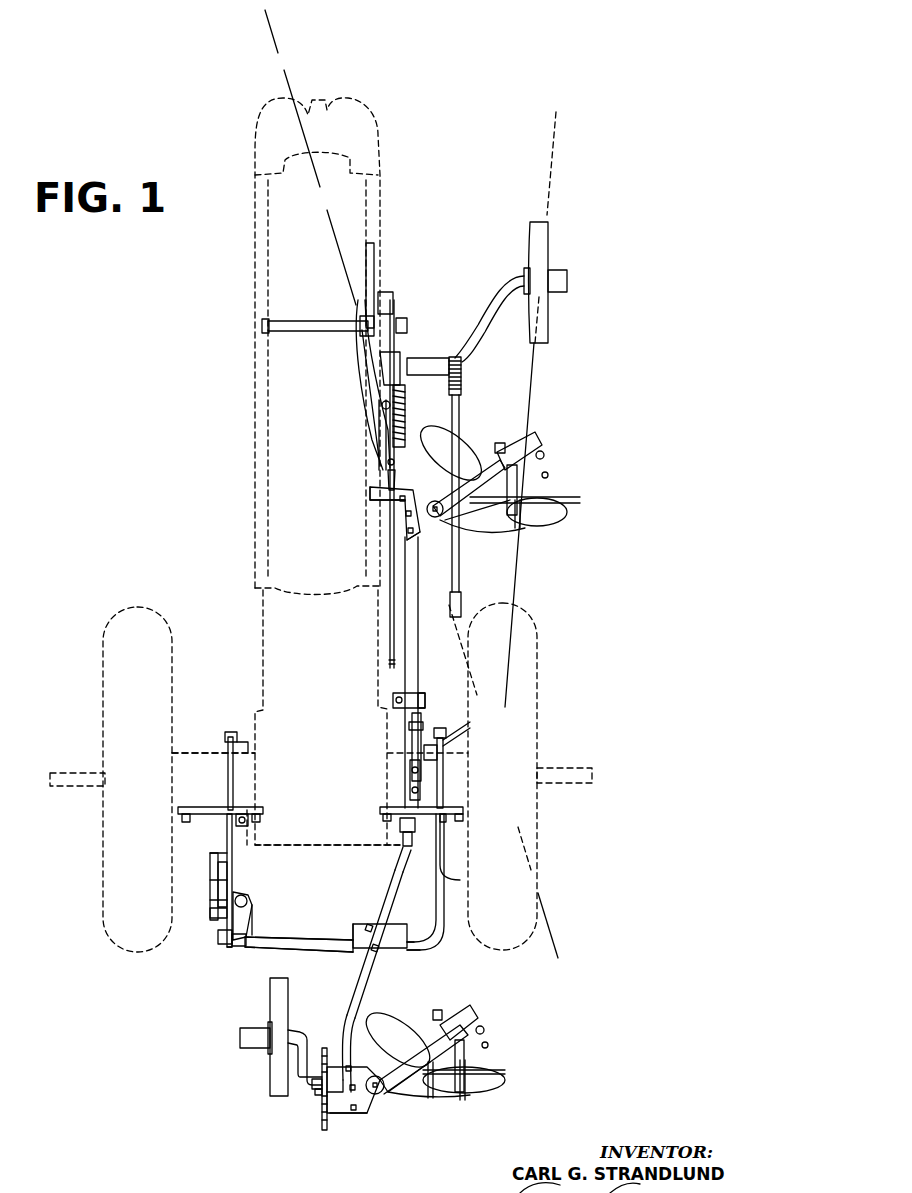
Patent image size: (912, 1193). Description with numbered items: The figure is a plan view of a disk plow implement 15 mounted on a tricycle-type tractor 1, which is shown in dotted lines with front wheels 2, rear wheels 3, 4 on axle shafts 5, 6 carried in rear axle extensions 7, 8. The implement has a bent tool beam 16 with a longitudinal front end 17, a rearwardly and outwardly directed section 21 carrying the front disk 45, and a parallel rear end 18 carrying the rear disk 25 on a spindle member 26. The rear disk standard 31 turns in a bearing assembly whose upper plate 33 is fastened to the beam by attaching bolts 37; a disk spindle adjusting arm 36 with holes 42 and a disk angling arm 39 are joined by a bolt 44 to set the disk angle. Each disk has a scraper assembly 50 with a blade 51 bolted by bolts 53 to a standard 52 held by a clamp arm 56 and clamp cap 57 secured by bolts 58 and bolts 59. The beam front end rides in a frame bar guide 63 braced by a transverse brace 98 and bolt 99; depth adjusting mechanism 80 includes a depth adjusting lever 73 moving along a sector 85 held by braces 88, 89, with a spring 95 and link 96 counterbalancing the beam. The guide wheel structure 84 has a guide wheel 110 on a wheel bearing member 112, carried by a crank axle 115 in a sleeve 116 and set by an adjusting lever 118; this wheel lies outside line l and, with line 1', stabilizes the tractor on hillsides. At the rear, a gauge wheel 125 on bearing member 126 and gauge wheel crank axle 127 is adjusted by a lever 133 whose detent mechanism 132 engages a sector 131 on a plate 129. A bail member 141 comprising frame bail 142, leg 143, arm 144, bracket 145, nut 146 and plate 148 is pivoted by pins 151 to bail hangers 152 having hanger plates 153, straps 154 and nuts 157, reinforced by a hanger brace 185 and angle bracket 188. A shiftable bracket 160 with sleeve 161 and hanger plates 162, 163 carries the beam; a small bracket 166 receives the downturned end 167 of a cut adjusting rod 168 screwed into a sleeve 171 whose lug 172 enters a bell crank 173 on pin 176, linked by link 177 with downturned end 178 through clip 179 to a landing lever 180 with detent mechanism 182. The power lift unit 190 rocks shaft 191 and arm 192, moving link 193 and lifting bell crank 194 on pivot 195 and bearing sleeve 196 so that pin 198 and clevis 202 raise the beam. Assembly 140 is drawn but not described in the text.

The tractor 1 is at (362, 484).
The line l' 1' is at (546, 409).
The front wheels 2 is at (318, 100).
The rear wheel 3 is at (540, 625).
The rear wheel 4 is at (102, 678).
The axle shaft 5 is at (560, 770).
The axle shaft 6 is at (62, 788).
The rear axle extension 7 is at (447, 755).
The rear axle extension 8 is at (208, 752).
The implement 15 is at (553, 403).
The tool beam 16 is at (426, 611).
The front end of tool beam 17 is at (384, 294).
The rear end of tool beam 18 is at (352, 1025).
The bar section 21 is at (395, 468).
The disk 25 is at (390, 1012).
The spindle member 26 is at (408, 1085).
The standard 31 is at (436, 518).
The upper plate 33 is at (418, 540).
The disk spindle adjusting arm 36 is at (462, 498).
The attaching bolts 37 is at (408, 530).
The disk angling arm 39 is at (445, 495).
The holes 42 is at (432, 1085).
The bolt 44 is at (478, 455).
The disk 45 is at (428, 430).
The scraper assembly 50 is at (511, 1071).
The blade 51 is at (555, 516).
The scraper standard 52 is at (520, 485).
The bolts 53 is at (520, 525).
The clamp arm 56 is at (512, 450).
The clamp cap 57 is at (532, 458).
The bolts 58 is at (545, 470).
The bolts 59 is at (497, 440).
The frame bar guide 63 is at (404, 298).
The depth adjusting lever 73 is at (385, 640).
The depth adjusting mechanism 80 is at (369, 464).
The guide wheel structure 84 is at (518, 230).
The sector 85 is at (374, 437).
The brace 88 is at (378, 394).
The brace 89 is at (380, 370).
The spring 95 is at (408, 405).
The link 96 is at (404, 326).
The transverse brace 98 is at (315, 321).
The bolt 99 is at (262, 325).
The guide wheel 110 is at (545, 233).
The wheel bearing member 112 is at (565, 276).
The guide wheel crank axle 115 is at (478, 315).
The sleeve 116 is at (420, 357).
The adjusting lever 118 is at (468, 380).
The gauge wheel 125 is at (269, 1087).
The bearing member 126 is at (240, 1040).
The gauge wheel crank axle 127 is at (298, 1080).
The plate 129 is at (338, 1055).
The sector 131 is at (323, 1130).
The detent mechanism 132 is at (312, 1090).
The gauge wheel adjusting lever 133 is at (318, 1092).
The drive assembly 140 is at (189, 972).
The bail member 141 is at (317, 914).
The frame bail 142 is at (288, 930).
The forwardly extending leg 143 is at (437, 889).
The frame bail arm 144 is at (226, 845).
The bracket 145 is at (228, 952).
The nut 146 is at (220, 935).
The plate 148 is at (240, 855).
The quick detachable pins 151 is at (245, 810).
The bail hangers 152 is at (208, 807).
The hanger plate 153 is at (465, 812).
The hanger straps 154 is at (455, 848).
The nuts 157 is at (462, 816).
The shiftable bracket 160 is at (325, 916).
The sleeve 161 is at (422, 945).
The hanger plate 162 is at (368, 910).
The hanger plate 163 is at (378, 952).
The small bracket 166 is at (352, 947).
The downturned end 167 is at (356, 925).
The cut adjusting rod 168 is at (290, 946).
The sleeve 171 is at (235, 950).
The lug 172 is at (243, 935).
The bell crank 173 is at (270, 905).
The pin 176 is at (242, 895).
The link 177 is at (215, 880).
The downturned end 178 is at (215, 912).
The clip 179 is at (212, 850).
The landing lever 180 is at (212, 870).
The detent mechanism 182 is at (215, 900).
The hanger brace 185 is at (470, 775).
The angle bracket 188 is at (446, 740).
The power lift unit 190 is at (334, 826).
The rock shaft 191 is at (360, 890).
The arm 192 is at (400, 825).
The link 193 is at (410, 770).
The lifting bell crank 194 is at (410, 722).
The pivot 195 is at (446, 732).
The bell crank bearing sleeve 196 is at (424, 718).
The pin 198 is at (418, 695).
The clevis 202 is at (395, 698).